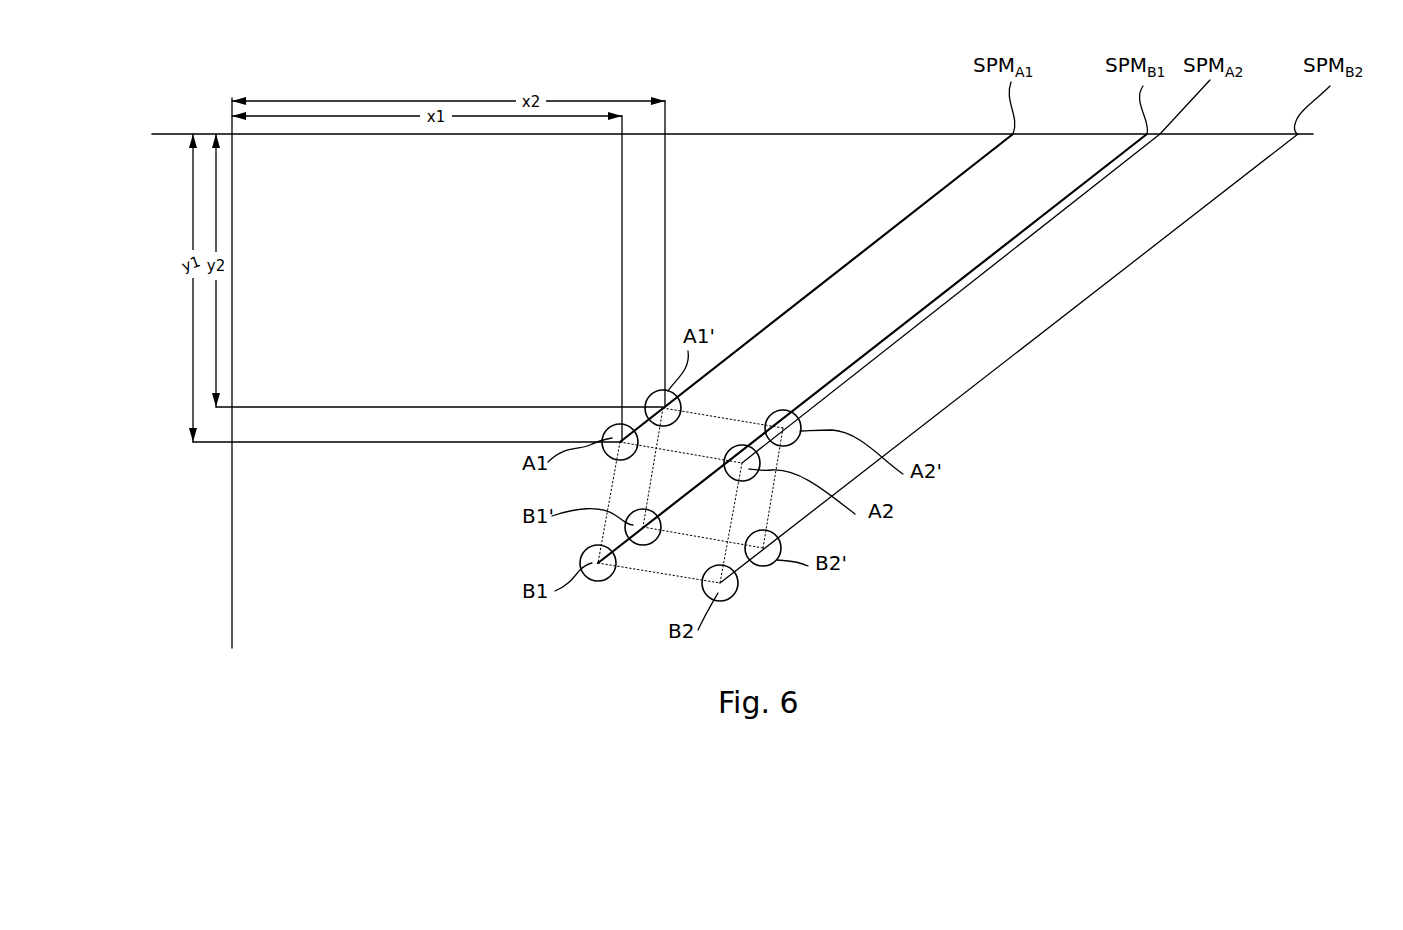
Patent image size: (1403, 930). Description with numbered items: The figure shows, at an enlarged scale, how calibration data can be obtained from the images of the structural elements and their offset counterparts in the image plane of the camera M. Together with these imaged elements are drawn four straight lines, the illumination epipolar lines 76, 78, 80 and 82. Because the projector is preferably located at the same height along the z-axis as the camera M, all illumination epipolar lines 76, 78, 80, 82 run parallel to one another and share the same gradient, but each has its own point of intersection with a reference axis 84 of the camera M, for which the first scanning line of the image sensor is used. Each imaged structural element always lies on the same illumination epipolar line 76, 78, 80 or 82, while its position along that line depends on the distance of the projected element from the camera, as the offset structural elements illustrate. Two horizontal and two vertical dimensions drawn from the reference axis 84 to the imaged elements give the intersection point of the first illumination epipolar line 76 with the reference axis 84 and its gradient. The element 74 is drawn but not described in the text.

The vertical reference line (x2 boundary) 74 is at (680, 153).
The reference axis 84 is at (728, 134).
The illumination epipolar line 76 is at (882, 237).
The illumination epipolar line 78 is at (1048, 211).
The illumination epipolar line 80 is at (1135, 153).
The illumination epipolar line 82 is at (1272, 156).